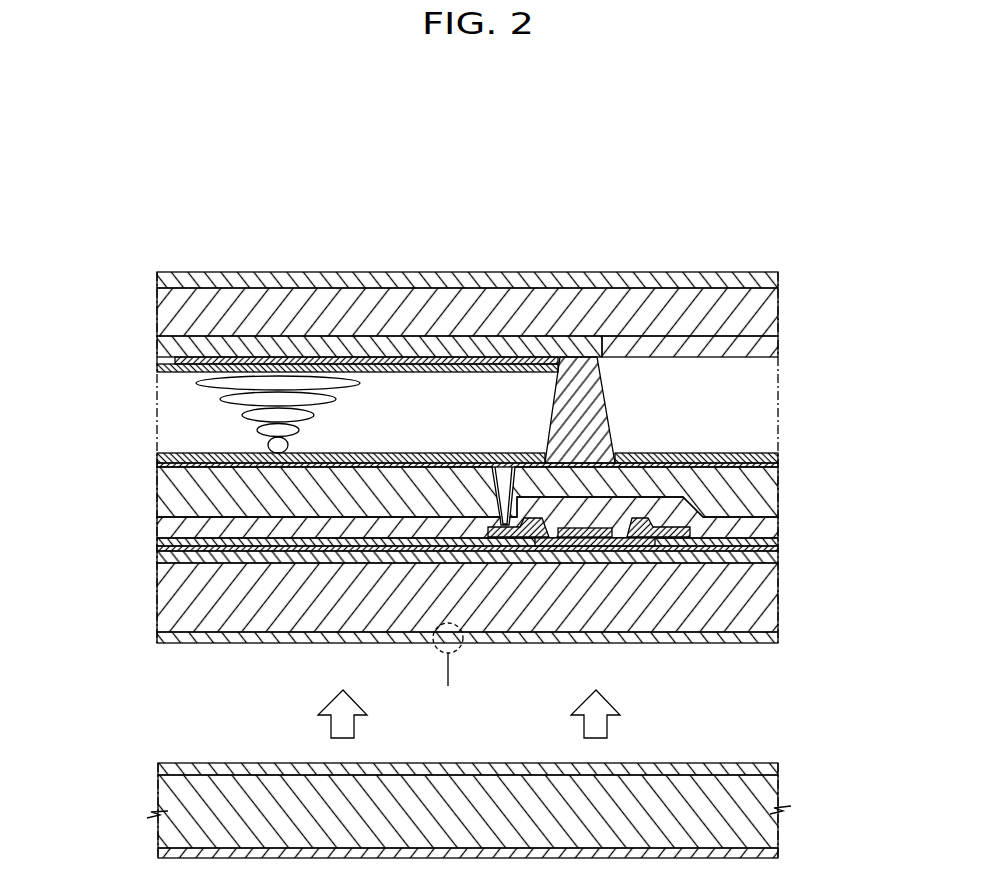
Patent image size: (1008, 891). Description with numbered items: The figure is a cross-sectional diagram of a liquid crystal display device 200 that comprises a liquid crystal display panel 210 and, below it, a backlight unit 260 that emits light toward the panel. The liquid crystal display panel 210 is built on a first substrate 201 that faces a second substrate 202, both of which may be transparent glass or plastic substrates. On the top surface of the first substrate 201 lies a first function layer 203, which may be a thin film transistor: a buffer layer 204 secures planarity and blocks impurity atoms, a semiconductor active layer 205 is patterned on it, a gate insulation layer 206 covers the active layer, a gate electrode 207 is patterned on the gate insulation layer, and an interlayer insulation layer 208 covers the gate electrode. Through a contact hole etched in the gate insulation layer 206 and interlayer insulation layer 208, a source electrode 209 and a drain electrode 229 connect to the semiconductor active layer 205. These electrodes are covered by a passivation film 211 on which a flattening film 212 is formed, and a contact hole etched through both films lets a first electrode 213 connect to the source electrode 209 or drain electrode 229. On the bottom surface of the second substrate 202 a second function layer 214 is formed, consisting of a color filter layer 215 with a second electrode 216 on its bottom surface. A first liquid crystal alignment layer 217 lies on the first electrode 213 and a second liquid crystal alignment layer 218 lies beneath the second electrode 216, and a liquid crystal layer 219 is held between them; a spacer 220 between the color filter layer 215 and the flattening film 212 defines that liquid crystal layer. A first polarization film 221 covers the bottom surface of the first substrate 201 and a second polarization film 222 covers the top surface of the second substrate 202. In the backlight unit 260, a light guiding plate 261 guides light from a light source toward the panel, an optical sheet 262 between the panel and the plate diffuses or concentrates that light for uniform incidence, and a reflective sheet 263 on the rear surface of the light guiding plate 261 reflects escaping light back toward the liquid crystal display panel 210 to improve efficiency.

The liquid crystal display device 200 is at (244, 171).
The liquid crystal display panel 210 is at (124, 268).
The backlight unit 260 is at (124, 754).
The second polarization film 222 is at (778, 276).
The second substrate 202 is at (778, 318).
The second function layer 214 is at (388, 217).
The color filter layer 215 is at (483, 356).
The second electrode 216 is at (392, 358).
The second liquid crystal alignment layer 218 is at (157, 370).
The liquid crystal layer 219 is at (178, 415).
The spacer 220 is at (590, 413).
The first liquid crystal alignment layer 217 is at (160, 457).
The first electrode 213 is at (158, 465).
The first function layer 203 is at (528, 576).
The flattening film 212 is at (778, 491).
The passivation film 211 is at (778, 526).
The interlayer insulation layer 208 is at (778, 542).
The gate insulation layer 206 is at (778, 549).
The buffer layer 204 is at (501, 572).
The first substrate 201 is at (778, 601).
The first polarization film 221 is at (778, 637).
The drain electrode 229 is at (523, 548).
The gate electrode 207 is at (570, 550).
The semiconductor active layer 205 is at (605, 552).
The source electrode 209 is at (650, 545).
The optical sheet 262 is at (778, 768).
The light guiding plate 261 is at (780, 799).
The reflective sheet 263 is at (778, 854).